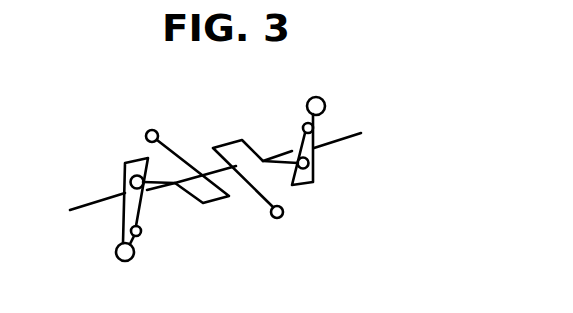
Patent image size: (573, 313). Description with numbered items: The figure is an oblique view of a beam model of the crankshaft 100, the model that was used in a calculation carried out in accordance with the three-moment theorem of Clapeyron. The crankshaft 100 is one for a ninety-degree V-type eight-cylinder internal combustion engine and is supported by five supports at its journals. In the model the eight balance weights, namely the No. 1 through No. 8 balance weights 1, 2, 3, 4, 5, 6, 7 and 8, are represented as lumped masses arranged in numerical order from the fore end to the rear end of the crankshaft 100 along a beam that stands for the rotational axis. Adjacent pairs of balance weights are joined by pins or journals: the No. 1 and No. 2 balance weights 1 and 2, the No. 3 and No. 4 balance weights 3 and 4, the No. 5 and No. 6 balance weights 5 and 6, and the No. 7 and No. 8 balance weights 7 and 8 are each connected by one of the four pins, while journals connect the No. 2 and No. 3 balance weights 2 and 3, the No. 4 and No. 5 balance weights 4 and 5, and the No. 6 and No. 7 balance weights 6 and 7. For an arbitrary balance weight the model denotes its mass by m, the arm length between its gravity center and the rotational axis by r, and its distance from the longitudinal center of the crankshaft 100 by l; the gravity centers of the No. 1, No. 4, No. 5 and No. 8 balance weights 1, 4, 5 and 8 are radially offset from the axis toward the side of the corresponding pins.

The No. 1 balance weight 1 is at (116, 253).
The No. 2 balance weight 2 is at (141, 234).
The No. 3 balance weight 3 is at (132, 176).
The No. 4 balance weight 4 is at (158, 131).
The No. 5 balance weight 5 is at (281, 218).
The No. 6 balance weight 6 is at (309, 165).
The No. 7 balance weight 7 is at (303, 125).
The No. 8 balance weight 8 is at (326, 102).
The crankshaft 100 is at (345, 132).